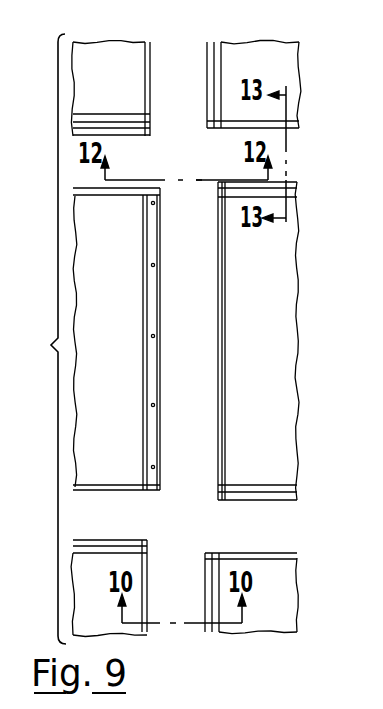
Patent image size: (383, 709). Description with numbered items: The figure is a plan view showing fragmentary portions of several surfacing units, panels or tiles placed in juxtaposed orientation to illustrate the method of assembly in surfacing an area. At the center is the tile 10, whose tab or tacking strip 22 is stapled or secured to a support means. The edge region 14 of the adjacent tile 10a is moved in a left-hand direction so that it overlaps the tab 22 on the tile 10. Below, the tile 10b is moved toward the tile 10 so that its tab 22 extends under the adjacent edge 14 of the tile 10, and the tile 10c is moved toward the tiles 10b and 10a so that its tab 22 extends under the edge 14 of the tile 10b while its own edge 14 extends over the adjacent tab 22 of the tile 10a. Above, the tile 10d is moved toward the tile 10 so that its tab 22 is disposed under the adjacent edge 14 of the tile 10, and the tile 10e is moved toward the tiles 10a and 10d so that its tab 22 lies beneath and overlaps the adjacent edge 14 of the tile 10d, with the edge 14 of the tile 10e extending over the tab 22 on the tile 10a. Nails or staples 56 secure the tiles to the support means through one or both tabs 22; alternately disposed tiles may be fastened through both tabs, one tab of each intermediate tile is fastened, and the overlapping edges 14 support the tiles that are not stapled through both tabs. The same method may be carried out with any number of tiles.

The tile 10 is at (112, 317).
The tile 10a is at (264, 320).
The tile 10b is at (101, 612).
The tile 10c is at (283, 612).
The tile 10d is at (112, 86).
The tile 10e is at (270, 72).
The edge region 14 is at (147, 60).
The tab or tacking strip 22 is at (123, 128).
The nails or staples 56 is at (154, 266).